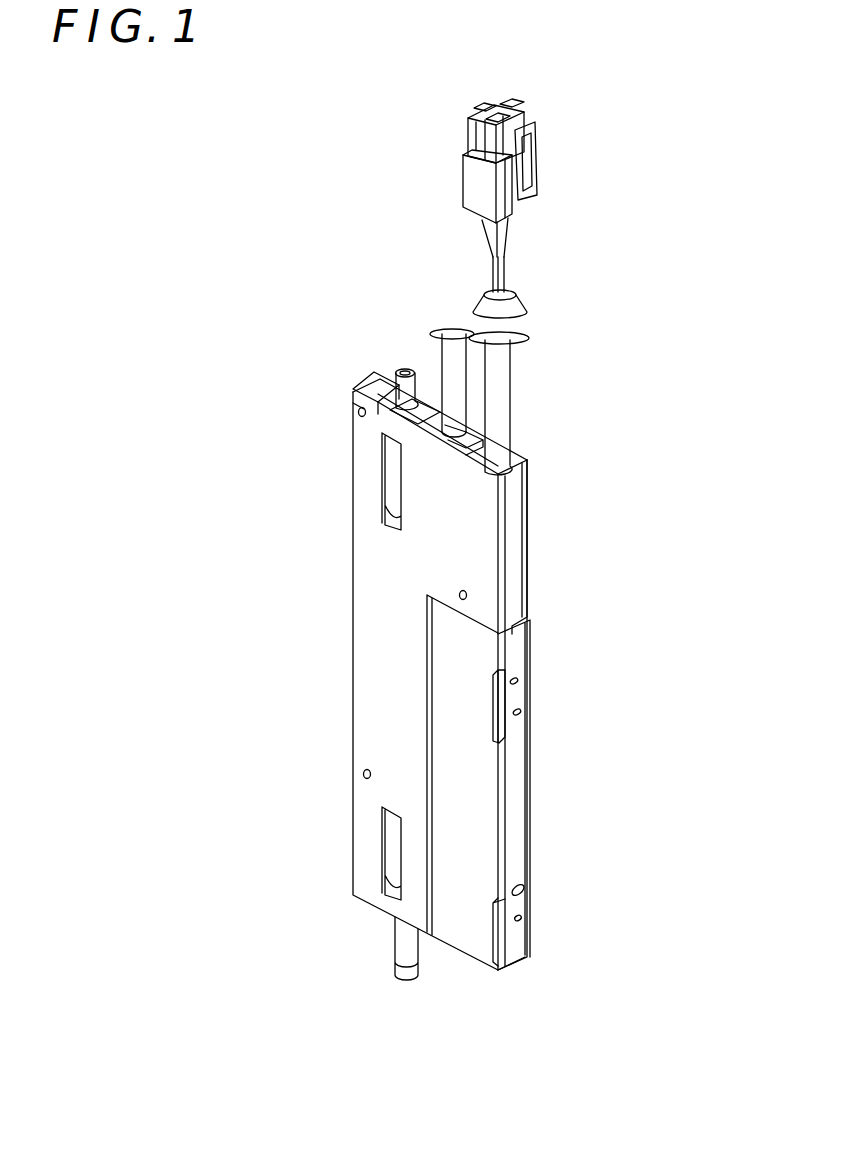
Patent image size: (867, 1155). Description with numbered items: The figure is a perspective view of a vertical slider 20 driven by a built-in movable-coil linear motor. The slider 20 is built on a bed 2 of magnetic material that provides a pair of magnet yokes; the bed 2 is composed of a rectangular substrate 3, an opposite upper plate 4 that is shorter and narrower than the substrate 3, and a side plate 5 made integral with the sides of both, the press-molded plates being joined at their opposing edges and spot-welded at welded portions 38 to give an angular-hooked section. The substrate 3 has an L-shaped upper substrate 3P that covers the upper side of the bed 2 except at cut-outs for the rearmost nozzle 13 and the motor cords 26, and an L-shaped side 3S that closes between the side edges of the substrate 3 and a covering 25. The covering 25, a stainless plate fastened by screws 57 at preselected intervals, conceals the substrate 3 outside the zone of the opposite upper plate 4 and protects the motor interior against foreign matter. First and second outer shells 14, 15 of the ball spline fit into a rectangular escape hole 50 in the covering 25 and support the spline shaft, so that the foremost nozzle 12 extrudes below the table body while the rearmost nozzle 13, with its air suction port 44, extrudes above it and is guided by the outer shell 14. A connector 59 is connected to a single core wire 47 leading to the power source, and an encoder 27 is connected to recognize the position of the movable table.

The vertical slider 20 is at (540, 465).
The covering 25 is at (378, 653).
The rearmost nozzle 13 is at (355, 406).
The air suction port 44 is at (393, 370).
The L-shaped upper substrate 3P is at (428, 395).
The encoder 27 is at (442, 360).
The motor cords 26 is at (500, 390).
The single core wire 47 is at (508, 270).
The connector 59 is at (478, 181).
The screws 57 is at (358, 416).
The escape hole 50 is at (382, 477).
The first outer shell 14 is at (385, 496).
The second outer shell 15 is at (385, 857).
The foremost nozzle 12 is at (395, 953).
The opposite upper plate 4 is at (477, 826).
The substrate 3 is at (527, 500).
The L-shaped side 3S is at (512, 528).
The bed 2 is at (528, 637).
The side plate 5 is at (513, 715).
The welded portions 38 is at (498, 733).